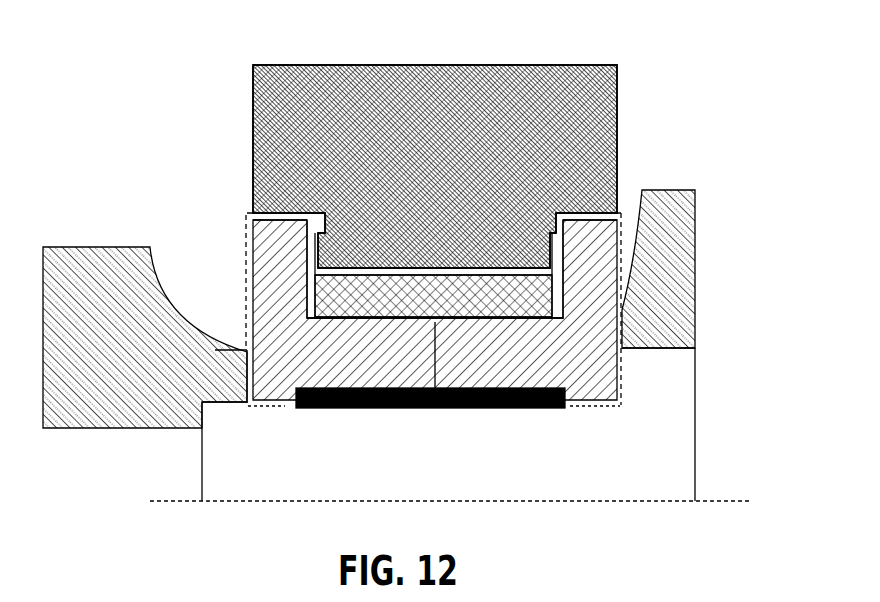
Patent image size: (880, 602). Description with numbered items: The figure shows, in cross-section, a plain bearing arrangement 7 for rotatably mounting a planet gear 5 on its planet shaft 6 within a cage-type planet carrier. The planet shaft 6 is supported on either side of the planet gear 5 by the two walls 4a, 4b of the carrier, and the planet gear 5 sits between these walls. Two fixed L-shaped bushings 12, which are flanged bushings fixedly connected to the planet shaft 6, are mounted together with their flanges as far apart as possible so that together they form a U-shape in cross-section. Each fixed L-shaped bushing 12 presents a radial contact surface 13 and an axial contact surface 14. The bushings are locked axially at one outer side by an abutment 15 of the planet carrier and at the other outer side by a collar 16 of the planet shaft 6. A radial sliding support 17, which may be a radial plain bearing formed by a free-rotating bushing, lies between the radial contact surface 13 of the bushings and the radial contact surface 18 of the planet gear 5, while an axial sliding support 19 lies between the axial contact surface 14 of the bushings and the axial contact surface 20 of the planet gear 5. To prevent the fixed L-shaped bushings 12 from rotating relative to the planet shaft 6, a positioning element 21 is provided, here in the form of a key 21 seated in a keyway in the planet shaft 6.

The wall of planet carrier 4a is at (110, 275).
The wall of planet carrier 4b is at (673, 212).
The planet gear 5 is at (570, 105).
The planet shaft 6 is at (665, 452).
The plain bearing arrangement 7 is at (625, 263).
The fixed L-shaped bushing 12 is at (263, 273).
The radial contact surface 13 is at (462, 325).
The axial contact surface 14 is at (246, 228).
The abutment 15 is at (230, 347).
The collar 16 is at (662, 370).
The radial sliding support 17 is at (538, 320).
The radial contact surface of planet gear 18 is at (482, 265).
The axial sliding support 19 is at (252, 190).
The axial contact surface of planet gear 20 is at (406, 262).
The positioning element 21 is at (345, 408).